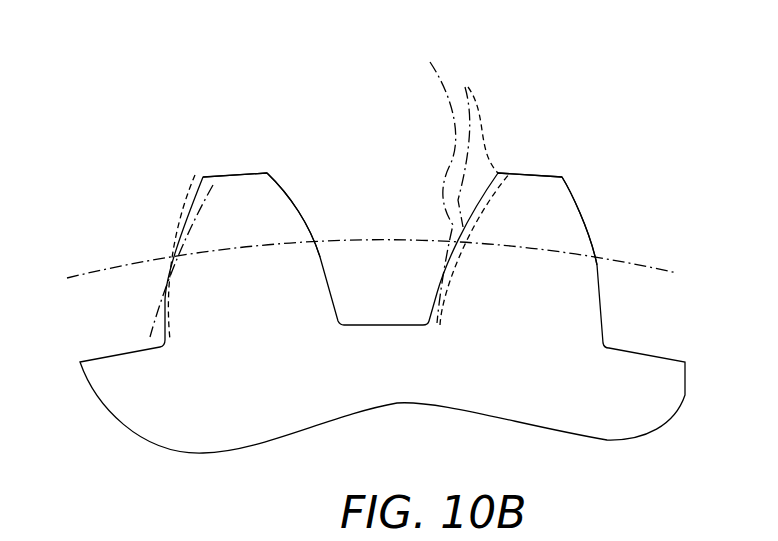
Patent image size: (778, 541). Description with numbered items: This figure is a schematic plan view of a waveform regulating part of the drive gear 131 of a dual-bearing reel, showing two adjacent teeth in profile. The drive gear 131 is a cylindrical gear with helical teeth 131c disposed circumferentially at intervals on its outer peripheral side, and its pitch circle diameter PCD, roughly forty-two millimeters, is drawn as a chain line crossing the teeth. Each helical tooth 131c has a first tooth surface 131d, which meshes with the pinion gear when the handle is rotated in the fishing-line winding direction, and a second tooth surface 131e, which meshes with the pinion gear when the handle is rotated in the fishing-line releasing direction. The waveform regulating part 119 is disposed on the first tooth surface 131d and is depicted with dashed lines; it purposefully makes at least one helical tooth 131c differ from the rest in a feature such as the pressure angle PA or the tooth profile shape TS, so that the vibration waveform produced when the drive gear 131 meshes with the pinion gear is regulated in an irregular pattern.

The drive gear 131 is at (233, 140).
The helical tooth 131c is at (222, 170).
The first tooth surface 131d is at (173, 230).
The second tooth surface 131e is at (303, 218).
The waveform regulating part 119 is at (417, 174).
The tooth profile shape TS is at (473, 137).
The pressure angle PA is at (188, 217).
The pitch circle diameter PCD is at (132, 265).